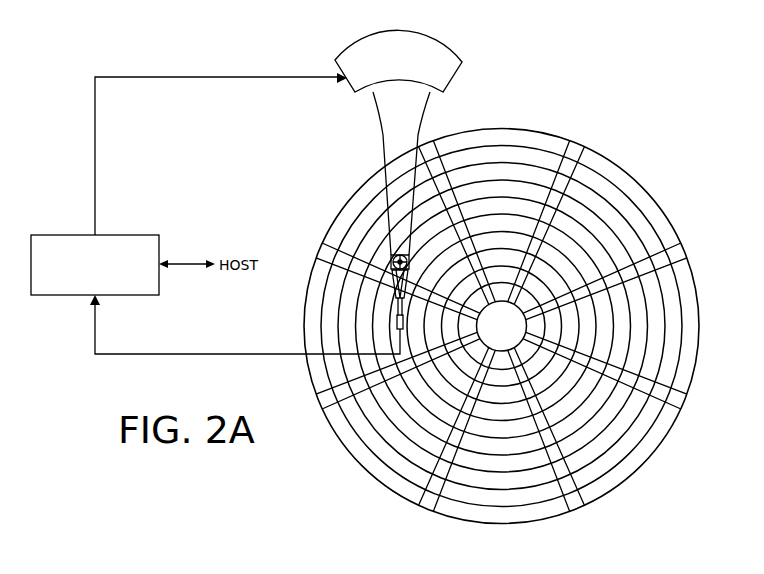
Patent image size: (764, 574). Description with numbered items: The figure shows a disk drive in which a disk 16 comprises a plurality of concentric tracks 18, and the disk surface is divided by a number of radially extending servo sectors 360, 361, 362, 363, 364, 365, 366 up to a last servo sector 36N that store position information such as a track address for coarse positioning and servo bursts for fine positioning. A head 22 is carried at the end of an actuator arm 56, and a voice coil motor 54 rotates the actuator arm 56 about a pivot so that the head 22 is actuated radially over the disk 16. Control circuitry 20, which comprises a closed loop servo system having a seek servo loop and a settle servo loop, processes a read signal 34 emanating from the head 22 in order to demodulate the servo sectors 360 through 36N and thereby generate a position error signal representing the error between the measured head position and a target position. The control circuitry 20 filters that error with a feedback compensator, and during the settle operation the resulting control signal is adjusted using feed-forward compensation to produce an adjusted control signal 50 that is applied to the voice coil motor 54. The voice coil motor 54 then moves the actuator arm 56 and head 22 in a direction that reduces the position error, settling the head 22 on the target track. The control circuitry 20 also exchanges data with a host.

The disk 16 is at (640, 170).
The tracks 18 is at (502, 158).
The control circuitry 20 is at (129, 235).
The head 22 is at (390, 329).
The read signal 34 is at (213, 355).
The servo sector 36N is at (436, 150).
The servo sector 360 is at (579, 148).
The servo sector 361 is at (678, 256).
The servo sector 362 is at (678, 400).
The servo sector 363 is at (574, 500).
The servo sector 364 is at (427, 500).
The servo sector 365 is at (326, 400).
The servo sector 366 is at (328, 248).
The adjusted control signal 50 is at (95, 145).
The voice coil motor 54 is at (355, 92).
The actuator arm 56 is at (384, 154).